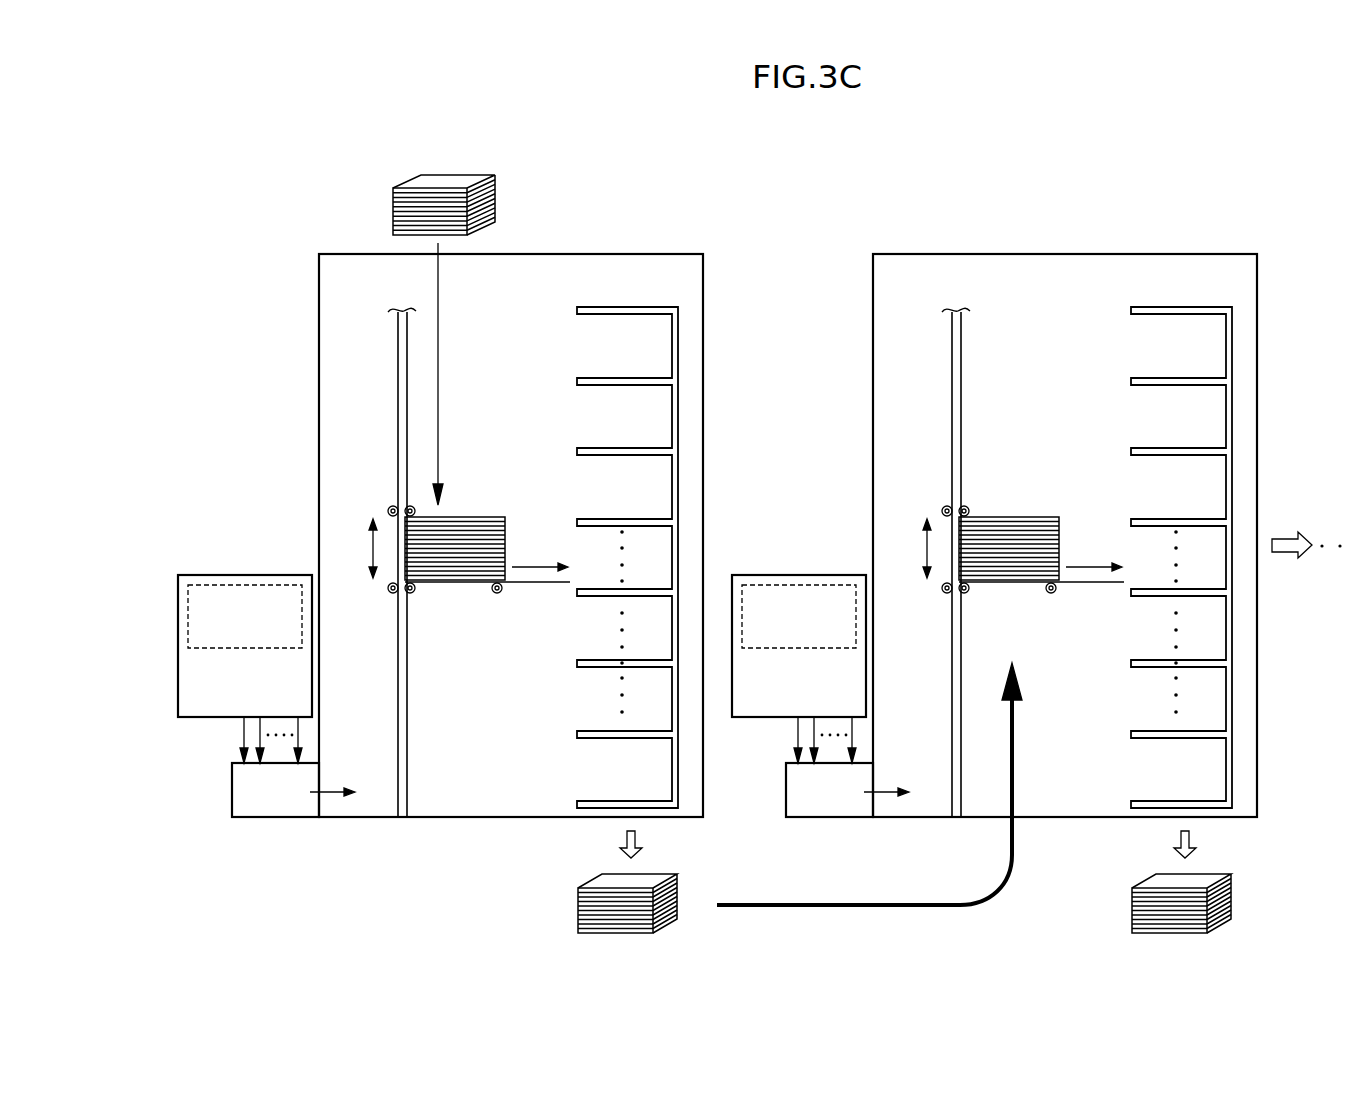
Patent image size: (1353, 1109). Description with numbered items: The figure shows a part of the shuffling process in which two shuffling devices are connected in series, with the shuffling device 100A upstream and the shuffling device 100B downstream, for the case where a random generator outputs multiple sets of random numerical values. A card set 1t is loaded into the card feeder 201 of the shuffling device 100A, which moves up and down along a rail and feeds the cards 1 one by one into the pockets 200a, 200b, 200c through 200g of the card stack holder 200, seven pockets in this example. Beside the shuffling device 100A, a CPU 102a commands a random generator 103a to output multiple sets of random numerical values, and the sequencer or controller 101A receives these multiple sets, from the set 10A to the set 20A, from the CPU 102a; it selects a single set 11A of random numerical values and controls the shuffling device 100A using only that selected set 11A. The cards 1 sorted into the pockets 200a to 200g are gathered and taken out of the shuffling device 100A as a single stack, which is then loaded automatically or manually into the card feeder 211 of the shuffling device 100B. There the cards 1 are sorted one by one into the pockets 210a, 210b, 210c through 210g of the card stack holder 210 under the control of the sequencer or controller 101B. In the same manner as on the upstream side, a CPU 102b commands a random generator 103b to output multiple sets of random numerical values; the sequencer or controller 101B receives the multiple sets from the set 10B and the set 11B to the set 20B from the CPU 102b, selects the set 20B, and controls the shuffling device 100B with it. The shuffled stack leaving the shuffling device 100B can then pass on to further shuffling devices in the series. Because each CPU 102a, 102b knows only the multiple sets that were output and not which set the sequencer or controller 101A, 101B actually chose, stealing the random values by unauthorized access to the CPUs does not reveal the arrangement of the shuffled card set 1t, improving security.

The card set 1t is at (393, 188).
The cards 1 is at (557, 587).
The shuffling device 100A is at (674, 242).
The shuffling device 100B is at (1228, 242).
The card stack holder 200 is at (597, 308).
The pocket 200a is at (624, 346).
The pocket 200b is at (624, 416).
The pocket 200c is at (624, 487).
The pocket 200g is at (624, 769).
The card feeder 201 is at (471, 516).
The CPU 102a is at (245, 646).
The random generator 103a is at (245, 616).
The sequencer or controller 101A is at (275, 790).
The set of random numerical values 10A is at (244, 732).
The set of random numerical values 11A is at (260, 740).
The set of random numerical values 20A is at (298, 727).
The card stack holder 210 is at (1151, 308).
The pocket 210a is at (1178, 346).
The pocket 210b is at (1178, 416).
The pocket 210c is at (1178, 487).
The pocket 210g is at (1178, 769).
The card feeder 211 is at (1025, 516).
The CPU 102b is at (799, 646).
The random generator 103b is at (799, 616).
The sequencer or controller 101B is at (829, 790).
The set of random numerical values 10B is at (798, 732).
The set of random numerical values 11B is at (814, 740).
The set of random numerical values 20B is at (852, 727).